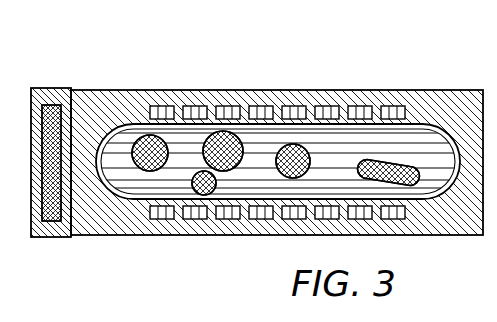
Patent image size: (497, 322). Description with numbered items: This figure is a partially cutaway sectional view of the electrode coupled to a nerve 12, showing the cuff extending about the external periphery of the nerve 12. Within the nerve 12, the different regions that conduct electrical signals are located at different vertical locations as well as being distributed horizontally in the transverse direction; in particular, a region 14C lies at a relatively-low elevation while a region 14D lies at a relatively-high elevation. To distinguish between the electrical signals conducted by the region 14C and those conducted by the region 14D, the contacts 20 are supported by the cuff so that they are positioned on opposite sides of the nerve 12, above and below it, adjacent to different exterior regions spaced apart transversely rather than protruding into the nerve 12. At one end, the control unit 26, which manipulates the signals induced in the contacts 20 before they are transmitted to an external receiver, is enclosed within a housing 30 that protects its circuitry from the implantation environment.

The nerve 12 is at (412, 118).
The region at a relatively-low elevation 14C is at (198, 187).
The region at a relatively-high elevation 14D is at (210, 125).
The contacts 20 is at (220, 97).
The control unit 26 is at (48, 95).
The housing 30 is at (33, 229).